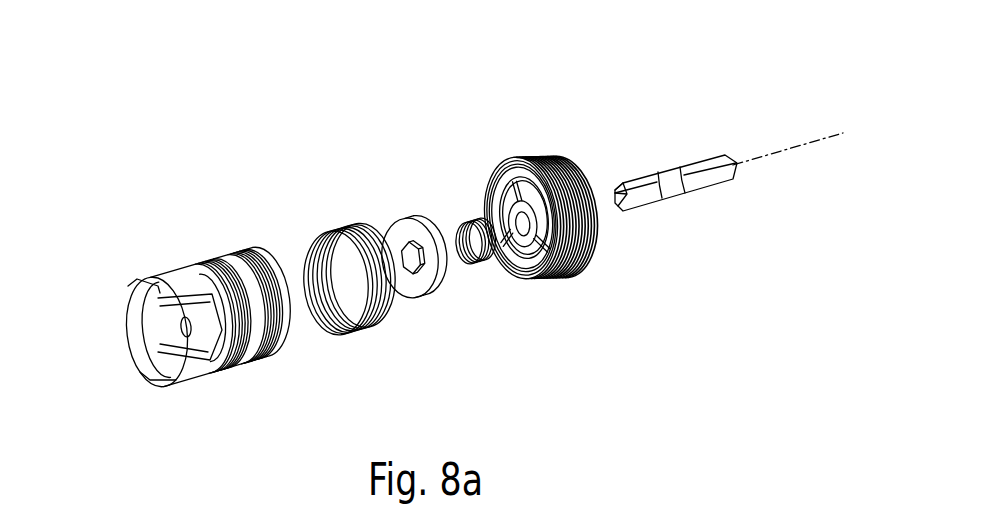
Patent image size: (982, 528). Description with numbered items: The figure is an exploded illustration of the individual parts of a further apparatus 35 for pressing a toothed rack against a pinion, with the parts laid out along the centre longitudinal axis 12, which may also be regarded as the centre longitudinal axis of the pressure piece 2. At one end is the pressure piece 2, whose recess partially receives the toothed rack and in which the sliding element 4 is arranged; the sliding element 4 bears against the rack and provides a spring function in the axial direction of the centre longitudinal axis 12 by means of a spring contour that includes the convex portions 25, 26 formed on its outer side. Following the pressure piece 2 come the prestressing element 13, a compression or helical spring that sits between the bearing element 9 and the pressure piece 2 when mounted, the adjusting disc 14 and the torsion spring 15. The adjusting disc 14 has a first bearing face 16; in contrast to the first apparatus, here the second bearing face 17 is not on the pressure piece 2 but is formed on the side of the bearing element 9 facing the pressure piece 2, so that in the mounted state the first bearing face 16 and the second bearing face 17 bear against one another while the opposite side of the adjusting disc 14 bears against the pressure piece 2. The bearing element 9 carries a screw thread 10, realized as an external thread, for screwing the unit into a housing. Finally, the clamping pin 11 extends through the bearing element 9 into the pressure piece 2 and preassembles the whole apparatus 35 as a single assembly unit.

The apparatus 35 is at (203, 97).
The pressure piece 2 is at (184, 252).
The sliding element 4 is at (150, 326).
The convex portion 26 is at (150, 322).
The convex portion 25 is at (150, 334).
The prestressing element 13 is at (333, 228).
The adjusting disc 14 is at (403, 218).
The first bearing face 16 is at (449, 288).
The torsion spring 15 is at (471, 230).
The bearing element 9 is at (541, 152).
The screw thread 10 is at (566, 158).
The second bearing face 17 is at (517, 282).
The clamping pin 11 is at (671, 158).
The centre longitudinal axis 12 is at (799, 147).